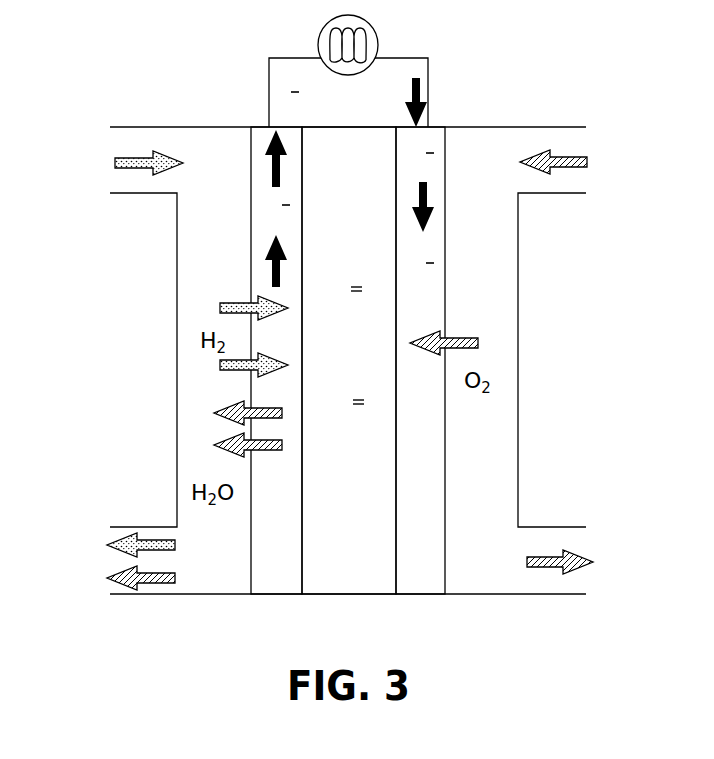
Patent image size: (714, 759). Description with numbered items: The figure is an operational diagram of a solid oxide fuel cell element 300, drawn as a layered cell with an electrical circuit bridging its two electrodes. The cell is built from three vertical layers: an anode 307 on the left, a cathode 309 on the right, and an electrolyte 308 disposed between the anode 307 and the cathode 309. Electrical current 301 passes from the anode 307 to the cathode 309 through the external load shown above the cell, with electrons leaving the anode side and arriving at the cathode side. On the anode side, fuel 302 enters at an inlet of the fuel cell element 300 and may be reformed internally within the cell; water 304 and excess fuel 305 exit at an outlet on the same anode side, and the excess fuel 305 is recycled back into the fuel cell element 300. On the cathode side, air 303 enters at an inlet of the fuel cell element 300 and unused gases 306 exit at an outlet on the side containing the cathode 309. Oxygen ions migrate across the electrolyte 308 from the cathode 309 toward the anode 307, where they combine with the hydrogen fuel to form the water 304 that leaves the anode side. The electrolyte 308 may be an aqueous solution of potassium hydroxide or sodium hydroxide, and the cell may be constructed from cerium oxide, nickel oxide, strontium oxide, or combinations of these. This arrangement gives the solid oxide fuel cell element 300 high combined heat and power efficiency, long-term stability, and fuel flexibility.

The solid oxide fuel cell element 300 is at (114, 27).
The electrical current 301 is at (325, 71).
The fuel 302 is at (128, 164).
The air 303 is at (573, 163).
The water 304 is at (161, 579).
The excess fuel 305 is at (161, 546).
The unused gases 306 is at (539, 563).
The anode 307 is at (260, 597).
The electrolyte 308 is at (347, 596).
The cathode 309 is at (432, 597).